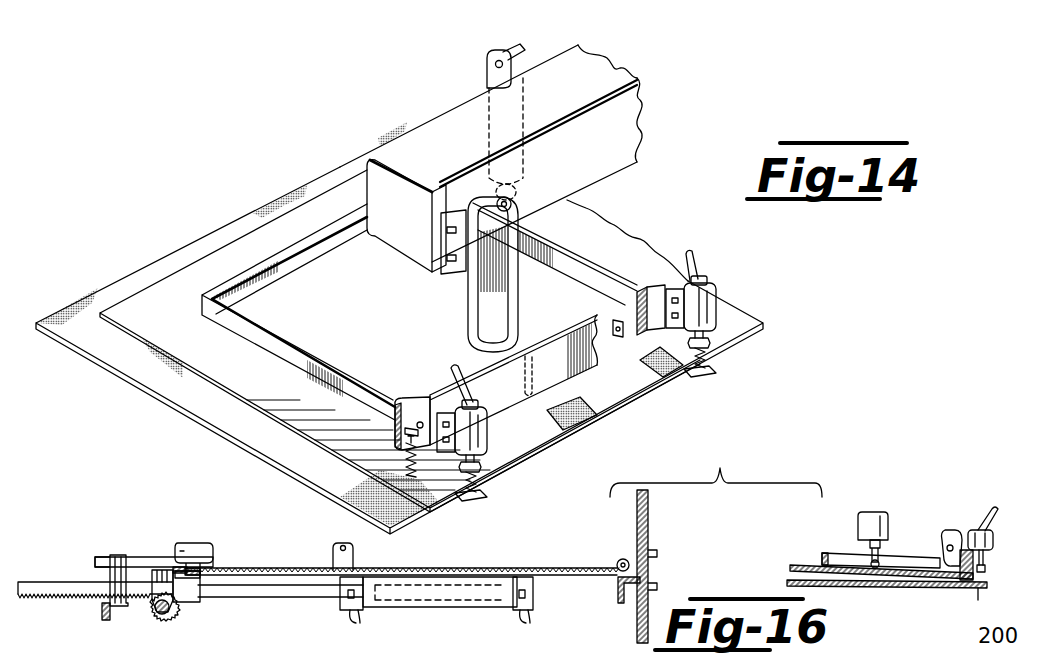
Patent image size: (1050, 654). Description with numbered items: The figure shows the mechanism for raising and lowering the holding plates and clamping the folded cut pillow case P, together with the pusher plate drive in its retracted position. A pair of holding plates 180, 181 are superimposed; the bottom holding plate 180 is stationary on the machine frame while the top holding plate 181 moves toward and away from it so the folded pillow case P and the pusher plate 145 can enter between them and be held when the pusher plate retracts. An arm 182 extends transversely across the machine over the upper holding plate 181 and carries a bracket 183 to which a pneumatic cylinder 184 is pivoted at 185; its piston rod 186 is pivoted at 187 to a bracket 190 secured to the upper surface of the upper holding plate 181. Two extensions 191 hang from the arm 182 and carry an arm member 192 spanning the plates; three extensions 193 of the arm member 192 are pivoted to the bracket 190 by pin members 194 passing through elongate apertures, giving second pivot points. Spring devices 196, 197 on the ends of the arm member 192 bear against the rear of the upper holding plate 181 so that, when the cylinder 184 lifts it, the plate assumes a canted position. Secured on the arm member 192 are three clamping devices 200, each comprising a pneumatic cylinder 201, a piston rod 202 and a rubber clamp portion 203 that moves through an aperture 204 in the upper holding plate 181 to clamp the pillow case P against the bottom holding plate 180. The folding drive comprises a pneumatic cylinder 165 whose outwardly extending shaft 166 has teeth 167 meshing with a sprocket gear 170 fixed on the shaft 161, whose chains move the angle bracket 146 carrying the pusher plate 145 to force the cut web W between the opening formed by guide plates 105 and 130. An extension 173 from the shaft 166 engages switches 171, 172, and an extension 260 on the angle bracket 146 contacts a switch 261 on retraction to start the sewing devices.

In FIG. 14, the pillow case P is at (173, 397).
In FIG. 14, the top holding plate 181 is at (337, 308).
In FIG. 16, the top holding plate 181 is at (810, 565).
In FIG. 14, the arm 182 is at (628, 128).
In FIG. 14, the bracket 183 is at (508, 52).
In FIG. 14, the pneumatic cylinder 184 is at (487, 78).
In FIG. 16, the pneumatic cylinder 184 is at (875, 515).
In FIG. 14, the pivot 185 is at (495, 63).
In FIG. 14, the piston rod 186 is at (520, 190).
In FIG. 16, the piston rod 186 is at (884, 548).
In FIG. 14, the pivot 187 is at (512, 204).
In FIG. 14, the bracket 190 is at (522, 227).
In FIG. 16, the bracket 190 is at (840, 548).
In FIG. 14, the extensions 191 is at (472, 289).
In FIG. 14, the arm member 192 is at (548, 357).
In FIG. 16, the arm member 192 is at (975, 530).
In FIG. 14, the extensions 193 is at (637, 292).
In FIG. 16, the extensions 193 is at (945, 549).
In FIG. 14, the pin members 194 is at (613, 322).
In FIG. 14, the spring device 196 is at (347, 507).
In FIG. 14, the clamping devices 200 is at (512, 437).
In FIG. 16, the clamping devices 200 is at (1002, 514).
In FIG. 14, the pneumatic cylinders 201 is at (447, 395).
In FIG. 16, the pneumatic cylinders 201 is at (985, 520).
In FIG. 14, the piston rods 202 is at (482, 456).
In FIG. 16, the piston rods 202 is at (985, 566).
In FIG. 14, the clamp portions 203 is at (480, 470).
In FIG. 16, the clamp portions 203 is at (975, 575).
In FIG. 14, the apertures 204 is at (447, 473).
In FIG. 16, the guide plate 105 is at (649, 524).
In FIG. 16, the guide plate 130 is at (645, 615).
In FIG. 16, the pusher plate 145 is at (503, 567).
In FIG. 16, the angle bracket 146 is at (195, 590).
In FIG. 16, the shaft 161 is at (160, 616).
In FIG. 16, the pneumatic cylinder 165 is at (440, 601).
In FIG. 16, the shaft 166 is at (285, 596).
In FIG. 16, the teeth 167 is at (80, 598).
In FIG. 16, the sprocket gear 170 is at (170, 614).
In FIG. 16, the switch 171 is at (195, 545).
In FIG. 16, the switch 172 is at (353, 552).
In FIG. 16, the extension 173 is at (190, 604).
In FIG. 16, the extension 260 is at (148, 557).
In FIG. 16, the switch 261 is at (107, 556).
In FIG. 16, the bottom holding plate 180 is at (850, 587).
In FIG. 16, the spring device 197 is at (980, 588).
In FIG. 16, the web W is at (637, 528).